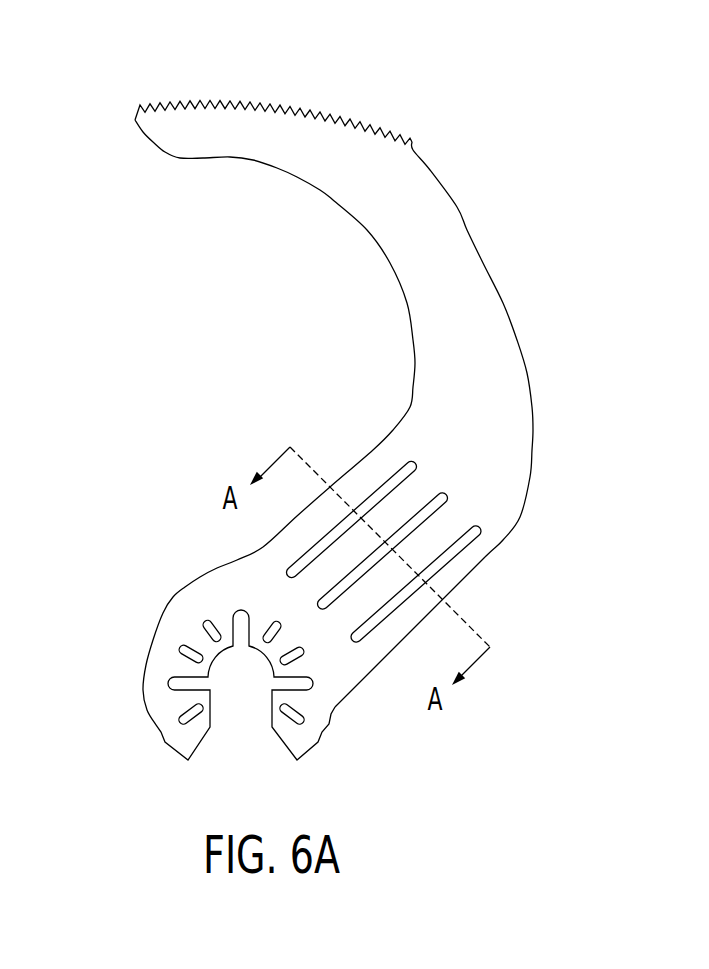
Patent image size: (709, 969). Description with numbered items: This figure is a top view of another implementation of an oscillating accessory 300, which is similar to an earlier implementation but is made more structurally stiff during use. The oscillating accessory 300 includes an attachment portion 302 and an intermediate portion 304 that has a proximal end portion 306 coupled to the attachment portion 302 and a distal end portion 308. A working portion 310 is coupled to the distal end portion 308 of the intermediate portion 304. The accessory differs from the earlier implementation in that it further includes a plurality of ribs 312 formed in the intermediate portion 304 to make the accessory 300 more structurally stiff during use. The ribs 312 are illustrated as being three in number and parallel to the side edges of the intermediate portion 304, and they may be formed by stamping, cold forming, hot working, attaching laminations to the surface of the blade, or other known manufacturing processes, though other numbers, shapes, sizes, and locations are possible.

The oscillating accessory 300 is at (337, 404).
The attachment portion 302 is at (120, 659).
The intermediate portion 304 is at (558, 359).
The proximal end portion 306 is at (350, 673).
The distal end portion 308 is at (427, 162).
The working portion 310 is at (188, 123).
The ribs 312 is at (414, 465).